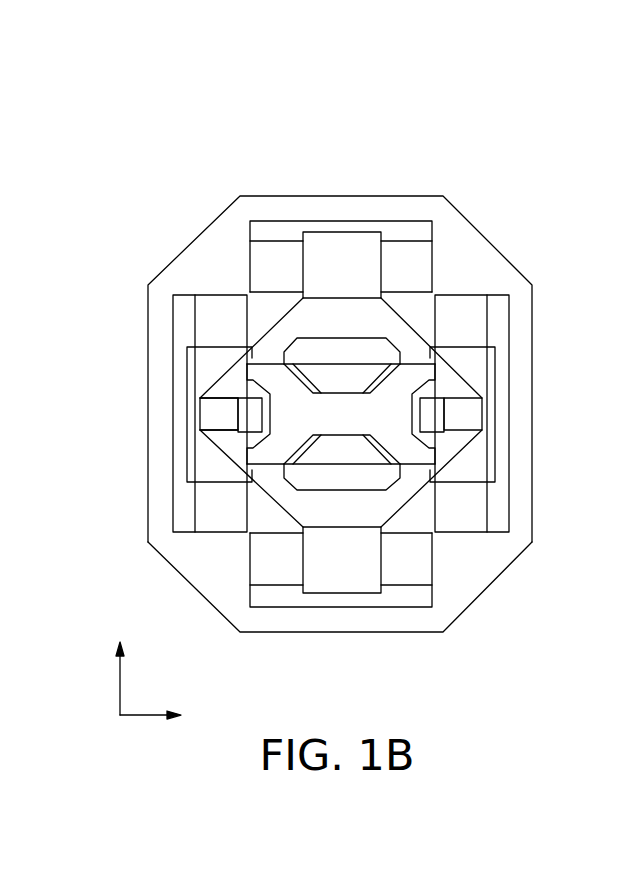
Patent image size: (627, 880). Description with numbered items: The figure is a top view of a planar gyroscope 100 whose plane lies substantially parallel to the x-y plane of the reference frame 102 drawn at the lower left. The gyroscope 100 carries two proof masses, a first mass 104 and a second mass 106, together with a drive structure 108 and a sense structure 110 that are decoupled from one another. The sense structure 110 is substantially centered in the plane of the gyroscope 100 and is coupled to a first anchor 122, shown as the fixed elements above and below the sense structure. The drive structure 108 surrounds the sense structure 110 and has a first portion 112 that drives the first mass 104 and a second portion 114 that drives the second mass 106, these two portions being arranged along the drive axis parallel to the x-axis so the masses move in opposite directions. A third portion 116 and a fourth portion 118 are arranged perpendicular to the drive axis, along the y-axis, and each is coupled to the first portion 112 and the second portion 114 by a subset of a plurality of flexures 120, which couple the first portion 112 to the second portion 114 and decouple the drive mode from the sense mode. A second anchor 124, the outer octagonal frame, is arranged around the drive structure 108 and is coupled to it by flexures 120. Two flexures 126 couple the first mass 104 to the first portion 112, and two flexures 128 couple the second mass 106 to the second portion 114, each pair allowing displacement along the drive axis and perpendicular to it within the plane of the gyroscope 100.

The gyroscope 100 is at (508, 138).
The reference frame 102 is at (118, 683).
The first mass 104 is at (238, 415).
The second mass 106 is at (438, 398).
The drive structure 108 is at (506, 488).
The sense structure 110 is at (287, 408).
The first portion 112 is at (195, 450).
The second portion 114 is at (490, 447).
The third portion 116 is at (310, 245).
The fourth portion 118 is at (341, 575).
The flexures 120 is at (405, 323).
The first anchor 122 is at (385, 348).
The second anchor 124 is at (268, 625).
The flexures 126 is at (218, 397).
The flexures 128 is at (462, 428).